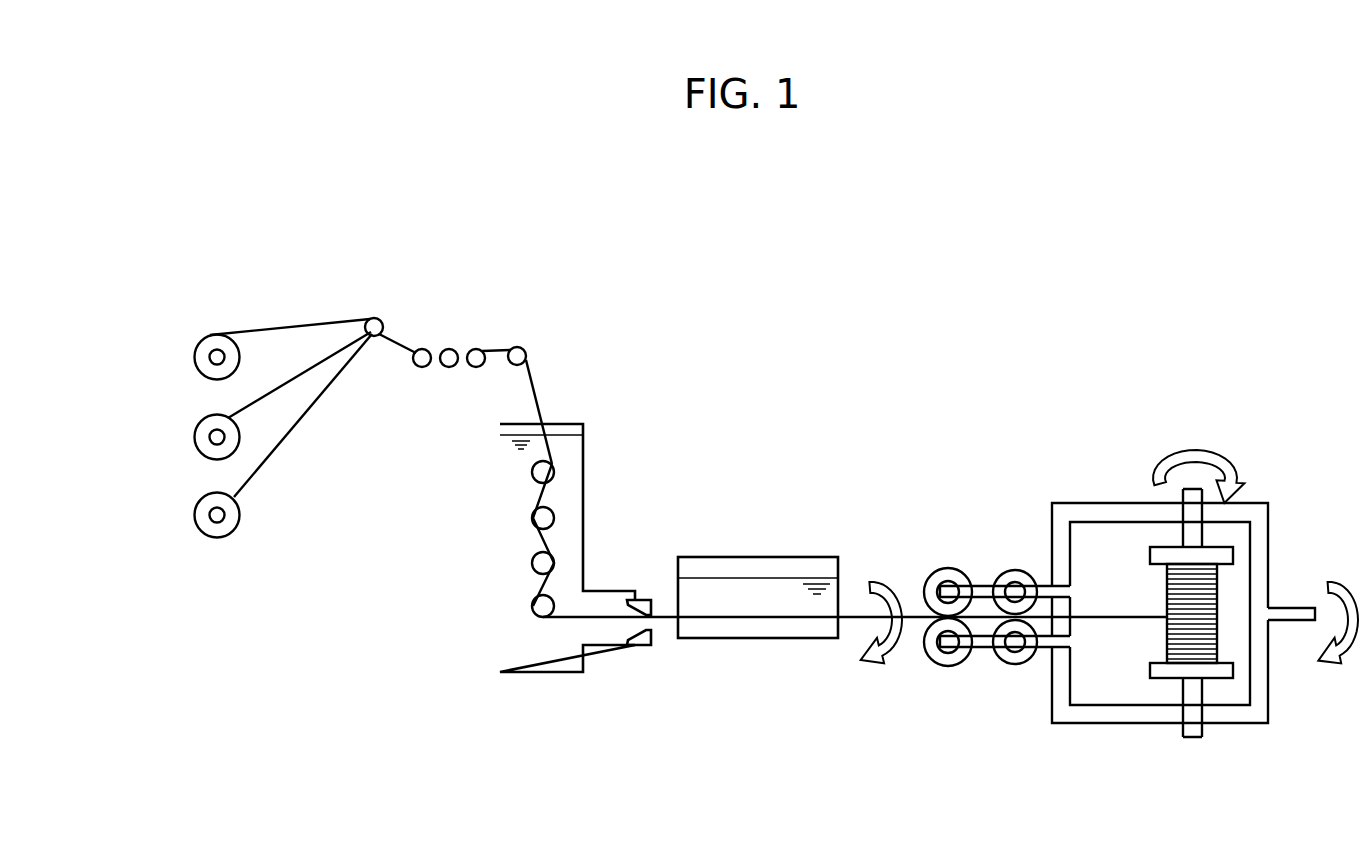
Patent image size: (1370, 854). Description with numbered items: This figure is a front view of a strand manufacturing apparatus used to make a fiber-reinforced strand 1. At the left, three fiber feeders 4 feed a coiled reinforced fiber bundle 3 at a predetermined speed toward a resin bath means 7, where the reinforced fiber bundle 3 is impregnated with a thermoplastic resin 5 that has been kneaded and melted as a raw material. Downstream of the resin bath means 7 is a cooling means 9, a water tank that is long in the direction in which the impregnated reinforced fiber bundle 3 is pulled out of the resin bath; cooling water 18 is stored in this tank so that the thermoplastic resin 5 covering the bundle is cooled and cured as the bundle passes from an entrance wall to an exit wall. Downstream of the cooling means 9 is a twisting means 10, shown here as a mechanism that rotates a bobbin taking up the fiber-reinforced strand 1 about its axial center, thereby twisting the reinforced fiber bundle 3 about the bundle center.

The fiber-reinforced strand 1 is at (1115, 618).
The reinforced fiber bundle 3 is at (397, 336).
The fiber feeders 4 is at (194, 357).
The thermoplastic resin 5 is at (550, 655).
The resin bath means 7 is at (500, 570).
The cooling means 9 is at (813, 557).
The twisting means 10 is at (1141, 543).
The cooling water 18 is at (730, 597).